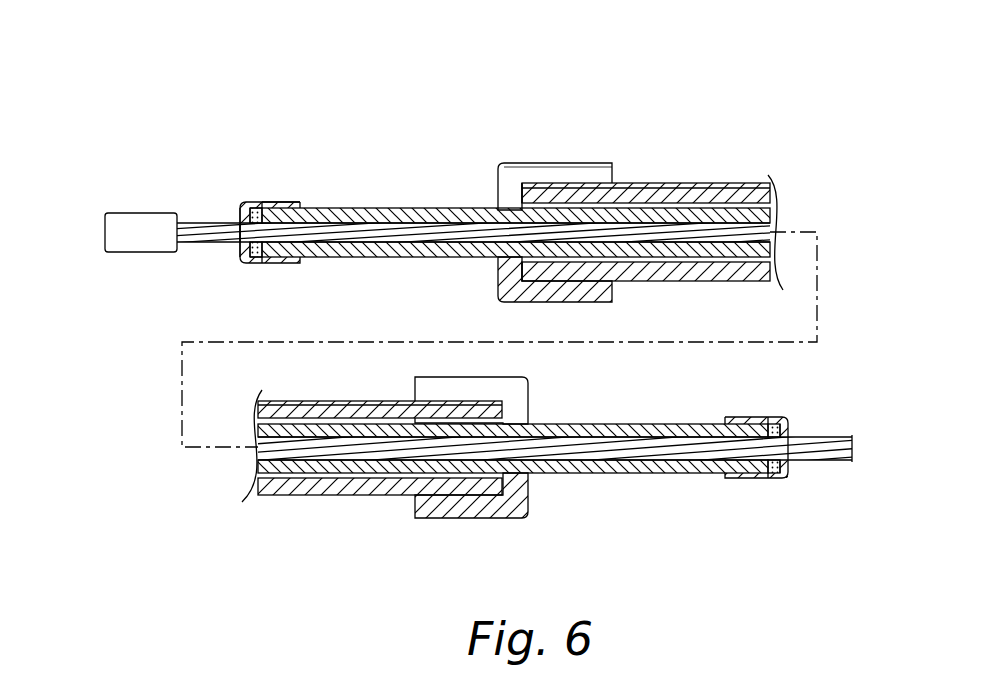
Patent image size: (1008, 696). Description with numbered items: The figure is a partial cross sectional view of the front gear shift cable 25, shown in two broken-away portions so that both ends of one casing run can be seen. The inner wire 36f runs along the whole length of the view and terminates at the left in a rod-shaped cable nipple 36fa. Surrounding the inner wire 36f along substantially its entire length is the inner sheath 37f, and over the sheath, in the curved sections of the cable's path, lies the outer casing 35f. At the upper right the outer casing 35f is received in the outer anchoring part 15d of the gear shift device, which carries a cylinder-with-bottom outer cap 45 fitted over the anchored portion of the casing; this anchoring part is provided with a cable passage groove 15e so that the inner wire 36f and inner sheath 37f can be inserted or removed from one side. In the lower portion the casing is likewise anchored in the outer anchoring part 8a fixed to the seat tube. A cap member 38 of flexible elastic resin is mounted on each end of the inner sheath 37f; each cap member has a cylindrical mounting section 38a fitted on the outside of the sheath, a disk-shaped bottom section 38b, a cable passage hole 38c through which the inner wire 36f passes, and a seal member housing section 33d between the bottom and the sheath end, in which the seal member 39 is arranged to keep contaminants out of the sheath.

The cable nipple 36fa is at (115, 213).
The front gear shift cable 25 is at (351, 185).
The inner sheath 37f is at (392, 212).
The outer casing 35f is at (688, 192).
The cable passage groove 15e is at (512, 168).
The outer anchoring part 15d is at (552, 156).
The outer cap 45 is at (587, 185).
The cap member 38 is at (307, 191).
The mounting section 38a is at (265, 207).
The bottom section 38b is at (240, 215).
The cable passage hole 38c is at (240, 237).
The seal member housing section 33d is at (252, 212).
The seal ring 39 is at (253, 260).
The inner wire 36f is at (598, 450).
The outer anchoring part 8a is at (493, 518).